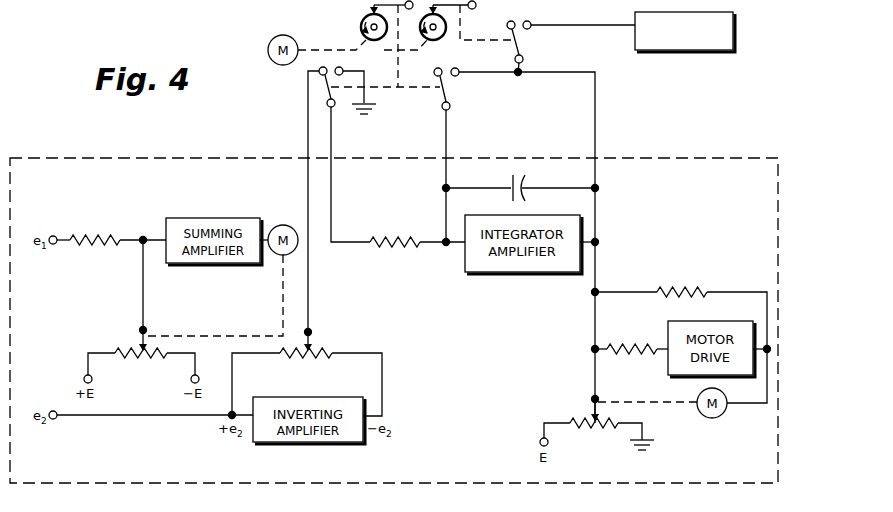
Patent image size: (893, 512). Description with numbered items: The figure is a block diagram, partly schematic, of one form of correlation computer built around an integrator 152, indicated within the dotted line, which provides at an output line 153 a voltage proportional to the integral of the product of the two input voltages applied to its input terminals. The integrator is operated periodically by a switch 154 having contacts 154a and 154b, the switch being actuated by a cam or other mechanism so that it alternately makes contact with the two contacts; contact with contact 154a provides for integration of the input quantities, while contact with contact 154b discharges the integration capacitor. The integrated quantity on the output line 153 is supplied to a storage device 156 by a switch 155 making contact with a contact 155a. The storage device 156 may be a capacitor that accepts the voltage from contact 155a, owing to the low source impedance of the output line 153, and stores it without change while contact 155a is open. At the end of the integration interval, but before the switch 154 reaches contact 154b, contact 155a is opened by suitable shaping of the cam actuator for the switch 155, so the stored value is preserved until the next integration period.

The integrator 152 is at (163, 156).
The output line 153 is at (598, 128).
The switch 154 is at (441, 94).
The contact 154a is at (320, 78).
The contact 154b is at (458, 77).
The switch 155 is at (514, 48).
The contact 155a is at (531, 30).
The storage device 156 is at (693, 52).